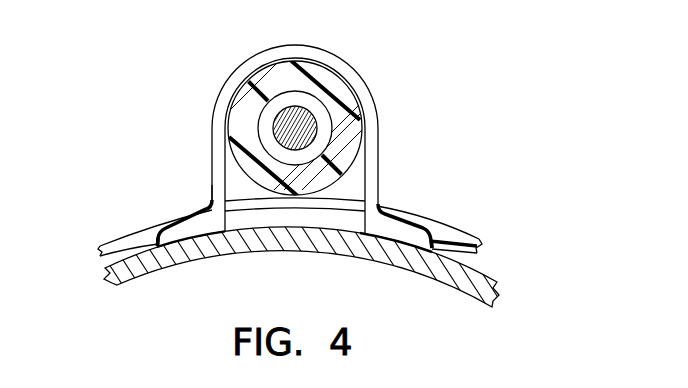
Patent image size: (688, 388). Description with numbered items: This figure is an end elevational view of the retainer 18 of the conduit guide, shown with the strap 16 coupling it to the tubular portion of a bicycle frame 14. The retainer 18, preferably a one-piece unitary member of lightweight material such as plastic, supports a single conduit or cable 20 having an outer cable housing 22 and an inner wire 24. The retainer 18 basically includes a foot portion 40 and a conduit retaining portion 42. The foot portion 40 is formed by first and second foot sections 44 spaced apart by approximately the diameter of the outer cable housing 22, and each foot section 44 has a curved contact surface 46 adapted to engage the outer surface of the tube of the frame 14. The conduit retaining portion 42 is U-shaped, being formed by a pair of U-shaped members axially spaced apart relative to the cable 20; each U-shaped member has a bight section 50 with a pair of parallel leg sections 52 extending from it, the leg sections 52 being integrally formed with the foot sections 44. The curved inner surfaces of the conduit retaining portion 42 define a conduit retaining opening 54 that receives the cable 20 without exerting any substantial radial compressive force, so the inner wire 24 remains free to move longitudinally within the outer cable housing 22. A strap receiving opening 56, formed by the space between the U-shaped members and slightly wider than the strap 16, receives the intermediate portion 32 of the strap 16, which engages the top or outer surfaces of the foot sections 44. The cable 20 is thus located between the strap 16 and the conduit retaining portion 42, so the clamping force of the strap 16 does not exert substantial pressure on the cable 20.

The bicycle frame 14 is at (497, 268).
The strap 16 is at (482, 229).
The retainer 18 is at (405, 46).
The cable 20 is at (358, 180).
The outer cable housing 22 is at (345, 157).
The inner wire 24 is at (303, 122).
The intermediate portion 32 is at (282, 211).
The foot portion 40 is at (201, 245).
The conduit retaining portion 42 is at (370, 73).
The foot sections 44 is at (159, 234).
The curved contact surface 46 is at (165, 247).
The bight section 50 is at (268, 50).
The leg sections 52 is at (212, 157).
The conduit retaining opening 54 is at (227, 180).
The strap receiving opening 56 is at (228, 218).